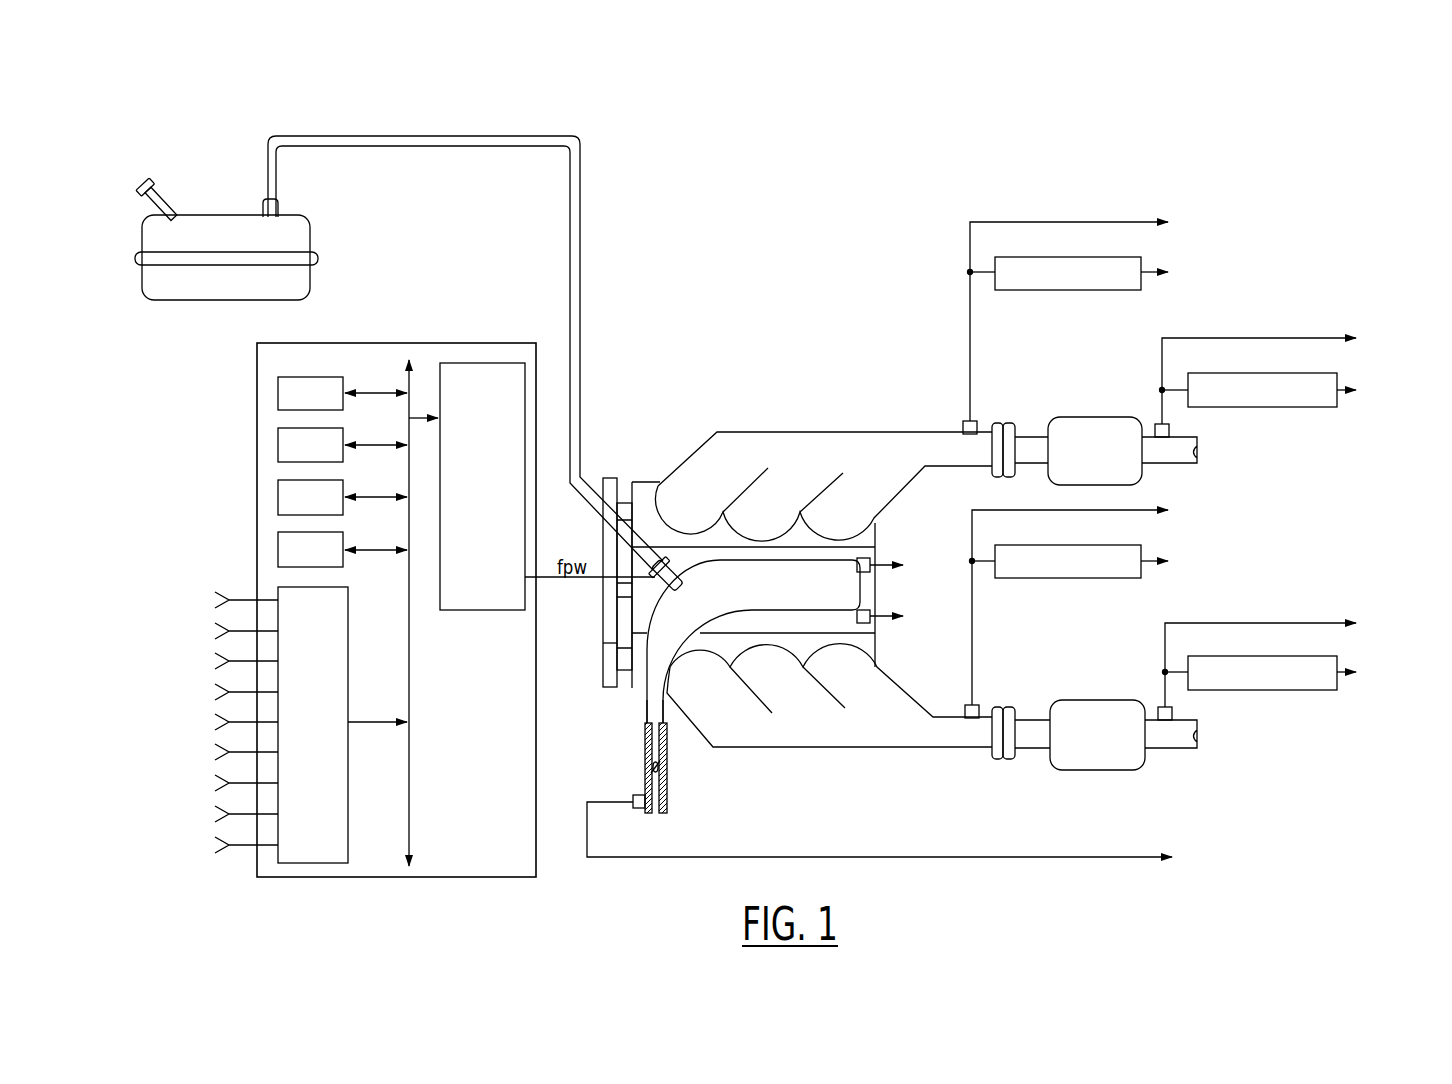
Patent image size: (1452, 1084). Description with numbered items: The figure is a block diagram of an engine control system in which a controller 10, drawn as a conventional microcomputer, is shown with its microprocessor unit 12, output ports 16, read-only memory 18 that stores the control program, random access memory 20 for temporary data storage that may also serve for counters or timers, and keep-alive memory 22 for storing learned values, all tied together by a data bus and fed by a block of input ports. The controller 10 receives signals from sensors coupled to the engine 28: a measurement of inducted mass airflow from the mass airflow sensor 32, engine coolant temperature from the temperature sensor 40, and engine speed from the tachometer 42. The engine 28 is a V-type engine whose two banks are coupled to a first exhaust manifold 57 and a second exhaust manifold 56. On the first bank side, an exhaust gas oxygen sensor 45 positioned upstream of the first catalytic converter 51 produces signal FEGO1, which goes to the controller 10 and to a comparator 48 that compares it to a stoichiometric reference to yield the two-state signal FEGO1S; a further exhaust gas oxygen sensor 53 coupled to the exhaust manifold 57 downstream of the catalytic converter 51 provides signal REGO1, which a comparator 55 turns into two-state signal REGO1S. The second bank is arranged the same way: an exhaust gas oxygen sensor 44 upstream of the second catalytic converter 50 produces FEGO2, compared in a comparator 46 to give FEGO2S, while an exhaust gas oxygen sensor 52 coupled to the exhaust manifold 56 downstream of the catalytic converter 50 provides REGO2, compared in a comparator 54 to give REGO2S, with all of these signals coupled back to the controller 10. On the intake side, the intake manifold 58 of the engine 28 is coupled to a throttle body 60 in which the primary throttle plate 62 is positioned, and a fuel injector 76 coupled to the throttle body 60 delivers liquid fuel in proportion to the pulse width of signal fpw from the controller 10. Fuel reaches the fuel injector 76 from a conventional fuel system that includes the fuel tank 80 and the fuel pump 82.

The controller 10 is at (368, 341).
The microprocessor unit 12 is at (278, 386).
The output ports 16 is at (493, 362).
The read-only memory 18 is at (278, 447).
The random access memory 20 is at (278, 496).
The keep-alive memory 22 is at (278, 550).
The engine 28 is at (668, 430).
The mass airflow sensor 32 is at (639, 795).
The temperature sensor 40 is at (868, 626).
The tachometer 42 is at (871, 560).
The exhaust gas oxygen sensor 44 is at (981, 705).
The exhaust gas oxygen sensor 45 is at (968, 420).
The comparator 46 is at (1083, 578).
The comparator 48 is at (1086, 292).
The second catalytic converter 50 is at (1093, 704).
The first catalytic converter 51 is at (1072, 426).
The exhaust gas oxygen sensor 52 is at (1176, 714).
The exhaust gas oxygen sensor 53 is at (1160, 425).
The comparator 54 is at (1261, 656).
The comparator 55 is at (1265, 408).
The second exhaust manifold 56 is at (843, 733).
The first exhaust manifold 57 is at (802, 440).
The intake manifold 58 is at (661, 678).
The throttle body 60 is at (645, 752).
The primary throttle plate 62 is at (660, 769).
The fuel injector 76 is at (671, 562).
The fuel tank 80 is at (312, 233).
The fuel pump 82 is at (280, 206).